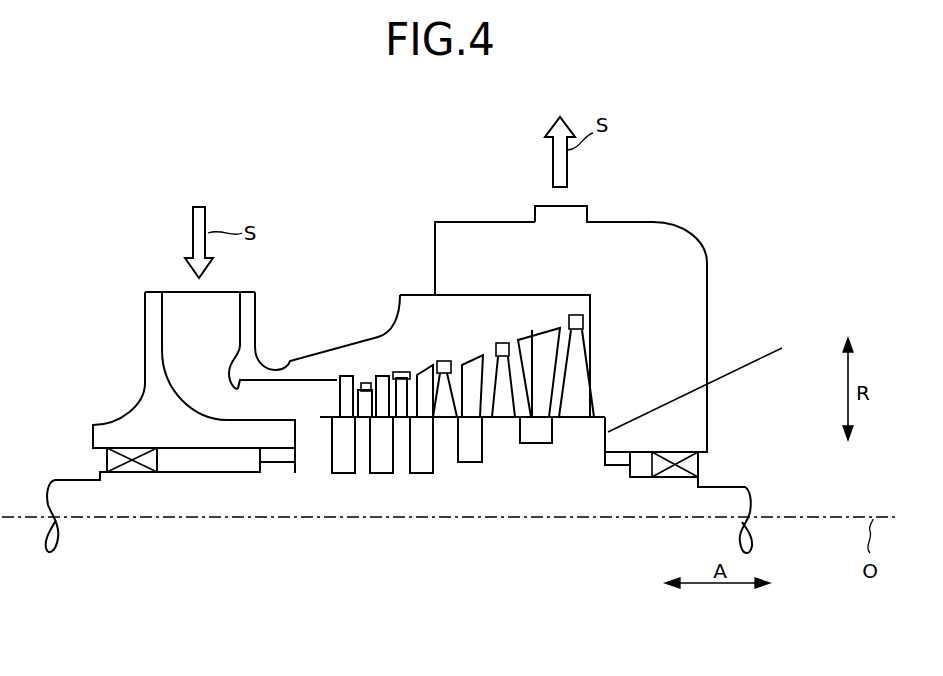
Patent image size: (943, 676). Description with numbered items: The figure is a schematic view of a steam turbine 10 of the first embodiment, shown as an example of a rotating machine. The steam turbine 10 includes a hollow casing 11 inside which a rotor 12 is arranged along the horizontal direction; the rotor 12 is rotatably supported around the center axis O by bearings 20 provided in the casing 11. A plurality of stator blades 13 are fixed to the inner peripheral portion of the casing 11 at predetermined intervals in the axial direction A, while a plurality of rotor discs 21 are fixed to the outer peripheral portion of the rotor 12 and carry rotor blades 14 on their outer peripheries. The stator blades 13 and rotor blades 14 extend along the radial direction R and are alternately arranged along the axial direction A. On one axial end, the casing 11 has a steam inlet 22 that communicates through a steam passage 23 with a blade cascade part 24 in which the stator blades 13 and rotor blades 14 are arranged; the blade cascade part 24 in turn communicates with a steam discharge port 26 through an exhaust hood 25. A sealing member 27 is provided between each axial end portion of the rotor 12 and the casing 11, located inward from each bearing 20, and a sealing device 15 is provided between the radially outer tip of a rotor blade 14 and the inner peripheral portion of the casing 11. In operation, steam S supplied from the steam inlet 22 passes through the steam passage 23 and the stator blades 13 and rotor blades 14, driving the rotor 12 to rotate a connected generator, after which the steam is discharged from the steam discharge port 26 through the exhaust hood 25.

The steam turbine 10 is at (382, 220).
The casing 11 is at (157, 403).
The rotor 12 is at (368, 502).
The stator blades 13 is at (420, 383).
The rotor blades 14 is at (364, 385).
The sealing device 15 is at (400, 372).
The bearings 20 is at (133, 470).
The rotor discs 21 is at (362, 442).
The steam inlet 22 is at (177, 303).
The steam passage 23 is at (297, 392).
The blade cascade part 24 is at (506, 342).
The exhaust hood 25 is at (694, 338).
The steam discharge port 26 is at (585, 206).
The sealing member 27 is at (280, 455).